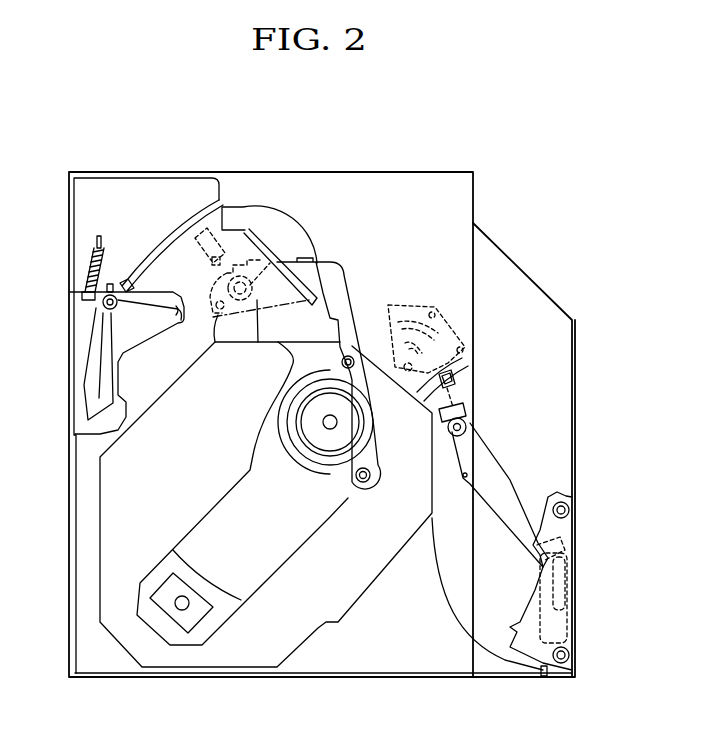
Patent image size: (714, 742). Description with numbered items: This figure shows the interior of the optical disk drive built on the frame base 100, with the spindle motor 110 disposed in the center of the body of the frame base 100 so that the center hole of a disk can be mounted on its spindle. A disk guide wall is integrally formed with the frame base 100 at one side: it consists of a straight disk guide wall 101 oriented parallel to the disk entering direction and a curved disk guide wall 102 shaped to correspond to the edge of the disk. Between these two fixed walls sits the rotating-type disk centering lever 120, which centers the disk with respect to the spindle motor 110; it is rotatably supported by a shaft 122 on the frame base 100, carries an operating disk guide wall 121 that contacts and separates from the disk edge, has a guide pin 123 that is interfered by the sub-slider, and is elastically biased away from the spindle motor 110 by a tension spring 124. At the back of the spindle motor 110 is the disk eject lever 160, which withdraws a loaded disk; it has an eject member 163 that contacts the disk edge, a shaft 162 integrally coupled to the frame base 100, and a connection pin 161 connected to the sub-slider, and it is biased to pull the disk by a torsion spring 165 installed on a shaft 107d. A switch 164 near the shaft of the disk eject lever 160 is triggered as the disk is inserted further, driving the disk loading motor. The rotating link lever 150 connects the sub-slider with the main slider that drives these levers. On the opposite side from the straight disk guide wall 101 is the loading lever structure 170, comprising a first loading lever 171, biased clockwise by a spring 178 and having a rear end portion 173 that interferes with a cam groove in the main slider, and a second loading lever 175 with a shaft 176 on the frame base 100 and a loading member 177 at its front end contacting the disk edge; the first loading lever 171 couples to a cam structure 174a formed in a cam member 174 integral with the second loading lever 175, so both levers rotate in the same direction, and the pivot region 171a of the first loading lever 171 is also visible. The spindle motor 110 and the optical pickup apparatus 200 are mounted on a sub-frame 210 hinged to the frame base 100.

The frame base 100 is at (326, 177).
The straight disk guide wall 101 is at (68, 497).
The curved disk guide wall 102 is at (172, 242).
The shaft 107d is at (240, 283).
The spindle motor 110 is at (318, 438).
The disk centering lever 120 is at (115, 340).
The operating disk guide wall 121 is at (88, 387).
The shaft 122 is at (96, 303).
The guide pin 123 is at (173, 312).
The tension spring 124 is at (88, 272).
The rotating link lever 150 is at (410, 303).
The disk eject lever 160 is at (336, 272).
The connection pin 161 is at (215, 343).
The shaft 162 is at (352, 356).
The eject member 163 is at (352, 481).
The switch 164 is at (208, 228).
The torsion spring 165 is at (258, 343).
The loading lever structure 170 is at (593, 561).
The first loading lever 171 is at (533, 481).
The arm pivot 171a is at (466, 427).
The rear end portion 173 is at (449, 379).
The cam member 174 is at (566, 625).
The cam structure 174a is at (563, 595).
The second loading lever 175 is at (547, 540).
The shaft 176 is at (568, 508).
The loading member 177 is at (586, 657).
The spring 178 is at (437, 350).
The optical pickup apparatus 200 is at (197, 590).
The sub-frame 210 is at (354, 594).